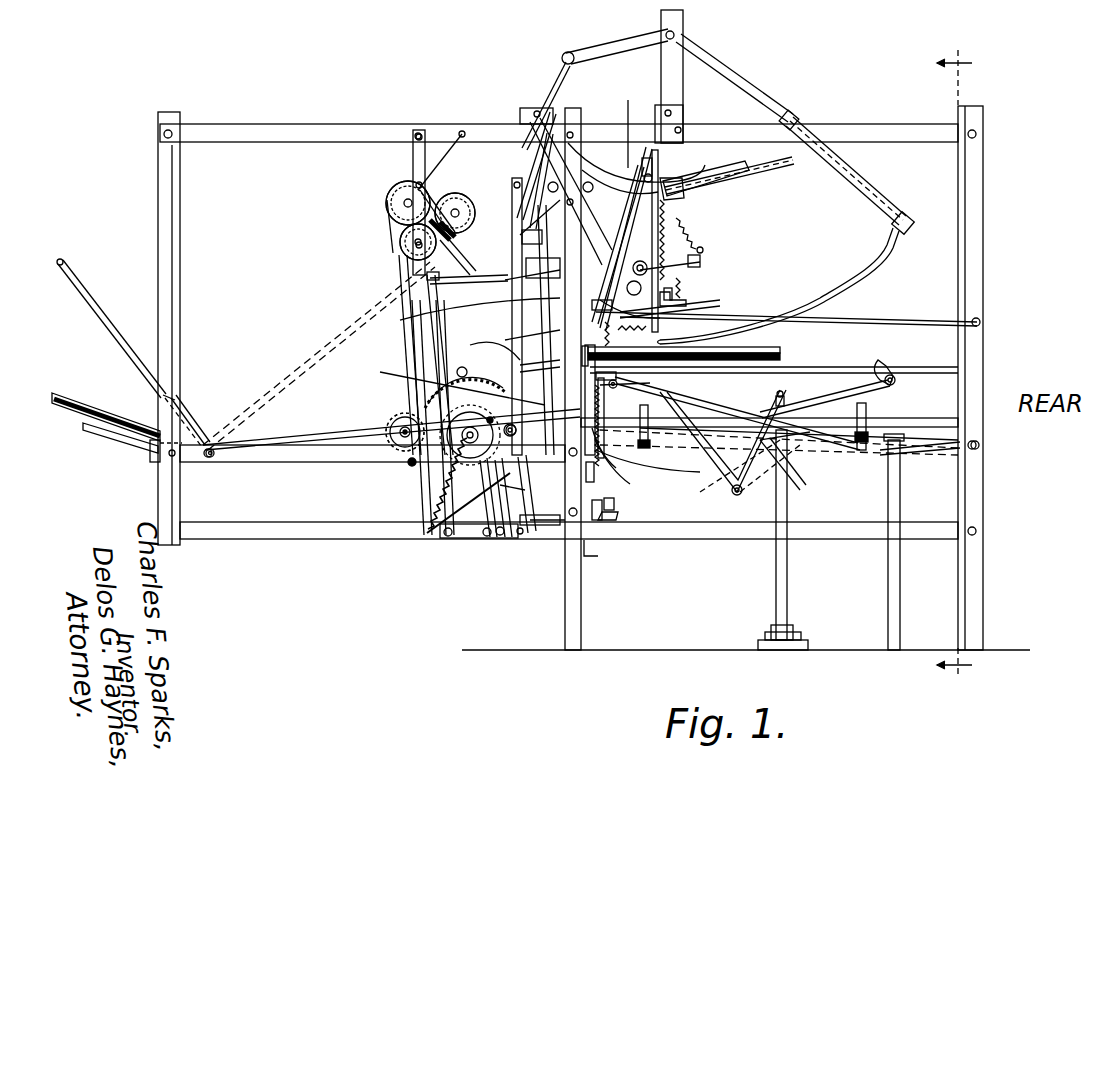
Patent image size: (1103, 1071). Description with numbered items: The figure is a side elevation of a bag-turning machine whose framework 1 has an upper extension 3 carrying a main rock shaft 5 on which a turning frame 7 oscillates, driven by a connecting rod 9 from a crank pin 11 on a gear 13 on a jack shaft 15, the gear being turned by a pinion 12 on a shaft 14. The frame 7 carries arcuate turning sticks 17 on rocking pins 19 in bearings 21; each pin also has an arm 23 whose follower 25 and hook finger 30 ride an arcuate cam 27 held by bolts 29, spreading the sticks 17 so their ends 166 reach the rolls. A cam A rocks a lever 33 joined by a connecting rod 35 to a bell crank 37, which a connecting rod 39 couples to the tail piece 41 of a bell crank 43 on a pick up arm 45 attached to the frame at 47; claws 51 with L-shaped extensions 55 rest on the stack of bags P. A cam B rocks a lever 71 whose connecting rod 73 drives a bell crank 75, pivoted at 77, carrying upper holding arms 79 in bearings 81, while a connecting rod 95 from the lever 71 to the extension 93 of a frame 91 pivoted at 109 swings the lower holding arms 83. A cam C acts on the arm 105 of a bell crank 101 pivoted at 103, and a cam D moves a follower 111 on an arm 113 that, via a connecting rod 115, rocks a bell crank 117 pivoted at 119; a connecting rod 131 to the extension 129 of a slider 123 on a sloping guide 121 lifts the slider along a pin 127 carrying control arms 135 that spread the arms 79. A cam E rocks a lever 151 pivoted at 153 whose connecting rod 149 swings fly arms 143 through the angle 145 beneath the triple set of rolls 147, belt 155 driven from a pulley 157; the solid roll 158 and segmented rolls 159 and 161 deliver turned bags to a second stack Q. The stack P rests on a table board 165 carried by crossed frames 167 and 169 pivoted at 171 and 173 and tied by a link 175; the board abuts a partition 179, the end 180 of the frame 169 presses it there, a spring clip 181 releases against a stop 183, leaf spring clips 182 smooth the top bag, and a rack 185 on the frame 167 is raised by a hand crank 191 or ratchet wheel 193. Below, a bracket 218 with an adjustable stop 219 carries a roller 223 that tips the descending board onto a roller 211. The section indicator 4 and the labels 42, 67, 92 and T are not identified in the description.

The framework 1 is at (249, 458).
The upper extension 3 is at (683, 20).
The section line 4 is at (964, 365).
The main rock shaft 5 is at (683, 38).
The turning frame 7 is at (722, 66).
The connecting rod 9 is at (556, 80).
The crank pin 11 is at (472, 530).
The pinion 12 is at (398, 455).
The gear 13 is at (412, 470).
The shaft 14 is at (410, 455).
The jack shaft 15 is at (445, 490).
The turning sticks 17 is at (872, 255).
The rocking pins 19 is at (855, 178).
The bearings 21 is at (914, 220).
The upper branch or arm 23 is at (780, 168).
The followers 25 is at (690, 165).
The arcuate cams 27 is at (585, 175).
The bolts 29 is at (560, 160).
The hook finger 30 is at (676, 195).
The rocking lever 33 is at (510, 245).
The connecting rod 35 is at (548, 225).
The bell crank 37 is at (630, 180).
The connecting rod 39 is at (700, 230).
The tail piece 41 is at (690, 284).
The bar 42 is at (712, 306).
The bell crank 43 is at (686, 300).
The pick up arm 45 is at (895, 320).
The rear attachment point 47 is at (982, 320).
The fingers or claws 51 is at (720, 374).
The L-shaped extension 55 is at (620, 430).
The block 67 is at (705, 262).
The oscillating lever 71 is at (438, 319).
The connecting rod 73 is at (470, 280).
The bell crank 75 is at (540, 205).
The pivot 77 is at (548, 150).
The upper holding arms 79 is at (542, 310).
The bearings 81 is at (512, 290).
The lower holding arms 83 is at (657, 421).
The frame 91 is at (618, 518).
The link 92 is at (616, 468).
The upward extension 93 is at (630, 484).
The connecting rod 95 is at (520, 398).
The bell crank 101 is at (612, 506).
The pivot 103 is at (532, 520).
The arm 105 is at (525, 487).
The pivot 109 is at (600, 512).
The follower 111 is at (520, 435).
The arm 113 is at (522, 375).
The connecting rod 115 is at (546, 263).
The bell crank 117 is at (592, 150).
The pivot 119 is at (548, 157).
The sloping guide 121 is at (650, 150).
The slider 123 is at (650, 174).
The pin 127 is at (668, 228).
The extension 129 is at (695, 241).
The connecting rod 131 is at (548, 238).
The control arms 135 is at (510, 300).
The fly arms 143 is at (262, 404).
The angle 145 is at (168, 388).
The triple set of rolls 147 is at (385, 182).
The connecting rod 149 is at (338, 440).
The rocking lever 151 is at (462, 362).
The pivot 153 is at (524, 538).
The belt 155 is at (393, 278).
The pulley 157 is at (388, 440).
The solid roll 158 is at (386, 204).
The segmented roll 159 is at (405, 255).
The segmented roll 161 is at (460, 193).
The table board 165 is at (870, 352).
The ends of turning sticks 166 is at (665, 330).
The crossed frame 167 is at (735, 398).
The crossed frame 169 is at (650, 255).
The pivot 171 is at (655, 483).
The pivot 173 is at (984, 447).
The link 175 is at (790, 455).
The partition 179 is at (616, 425).
The end of frame 180 is at (884, 360).
The spring clip 181 is at (896, 370).
The flexible leaf spring clip devices 182 is at (420, 305).
The stop 183 is at (900, 494).
The rack 185 is at (712, 246).
The hand crank 191 is at (700, 296).
The ratchet wheel 193 is at (712, 264).
The roller 211 is at (700, 450).
The bracket 218 is at (790, 567).
The adjustable stop 219 is at (790, 622).
The roller 223 is at (780, 392).
The cam A is at (462, 372).
The cam B is at (448, 410).
The cam C is at (472, 462).
The cam D is at (512, 460).
The cam E is at (440, 395).
The stack of bags P is at (775, 352).
The second stack Q is at (102, 412).
The table T is at (735, 355).